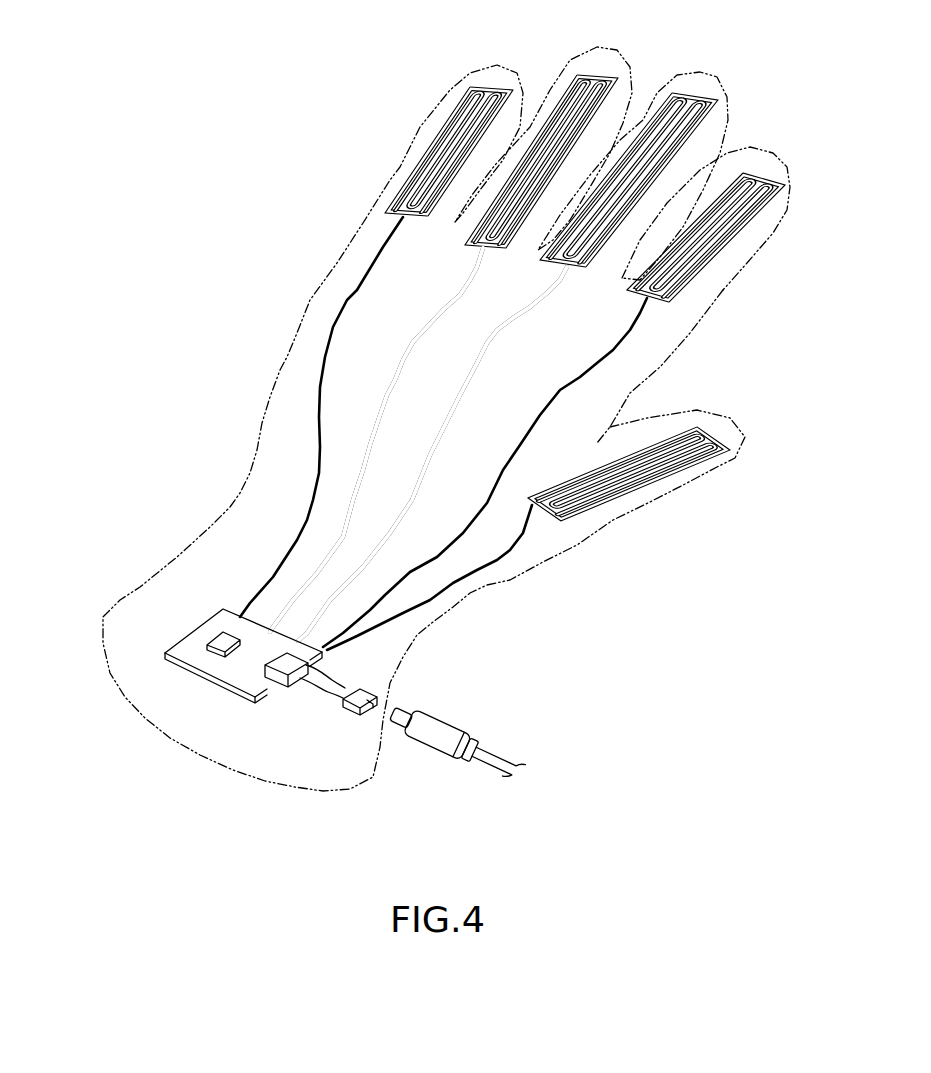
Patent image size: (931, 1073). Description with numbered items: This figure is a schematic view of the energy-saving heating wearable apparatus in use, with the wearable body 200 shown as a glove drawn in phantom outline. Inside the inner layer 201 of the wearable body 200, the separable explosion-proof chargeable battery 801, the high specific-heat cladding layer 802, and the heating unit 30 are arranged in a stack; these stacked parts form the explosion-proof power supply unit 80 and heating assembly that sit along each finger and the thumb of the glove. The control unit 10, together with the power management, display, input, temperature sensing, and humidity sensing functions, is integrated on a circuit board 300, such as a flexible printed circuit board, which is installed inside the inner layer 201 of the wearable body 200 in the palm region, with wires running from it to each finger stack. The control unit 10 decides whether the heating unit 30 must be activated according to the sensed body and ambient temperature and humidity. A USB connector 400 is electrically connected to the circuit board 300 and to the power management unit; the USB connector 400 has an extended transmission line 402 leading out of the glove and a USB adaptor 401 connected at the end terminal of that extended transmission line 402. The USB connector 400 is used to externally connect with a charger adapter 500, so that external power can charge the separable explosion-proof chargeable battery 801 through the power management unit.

The control unit 10 is at (258, 82).
The wearable body 200 is at (290, 358).
The inner layer 201 is at (757, 147).
The heating unit 30 is at (600, 511).
The explosion-proof power supply unit 80 is at (648, 486).
The separable explosion-proof chargeable battery 801 is at (629, 474).
The high specific-heat cladding layer 802 is at (629, 474).
The circuit board 300 is at (208, 633).
The USB connector 400 is at (283, 670).
The USB adaptor 401 is at (365, 697).
The extended transmission line 402 is at (332, 685).
The charger adapter 500 is at (450, 728).